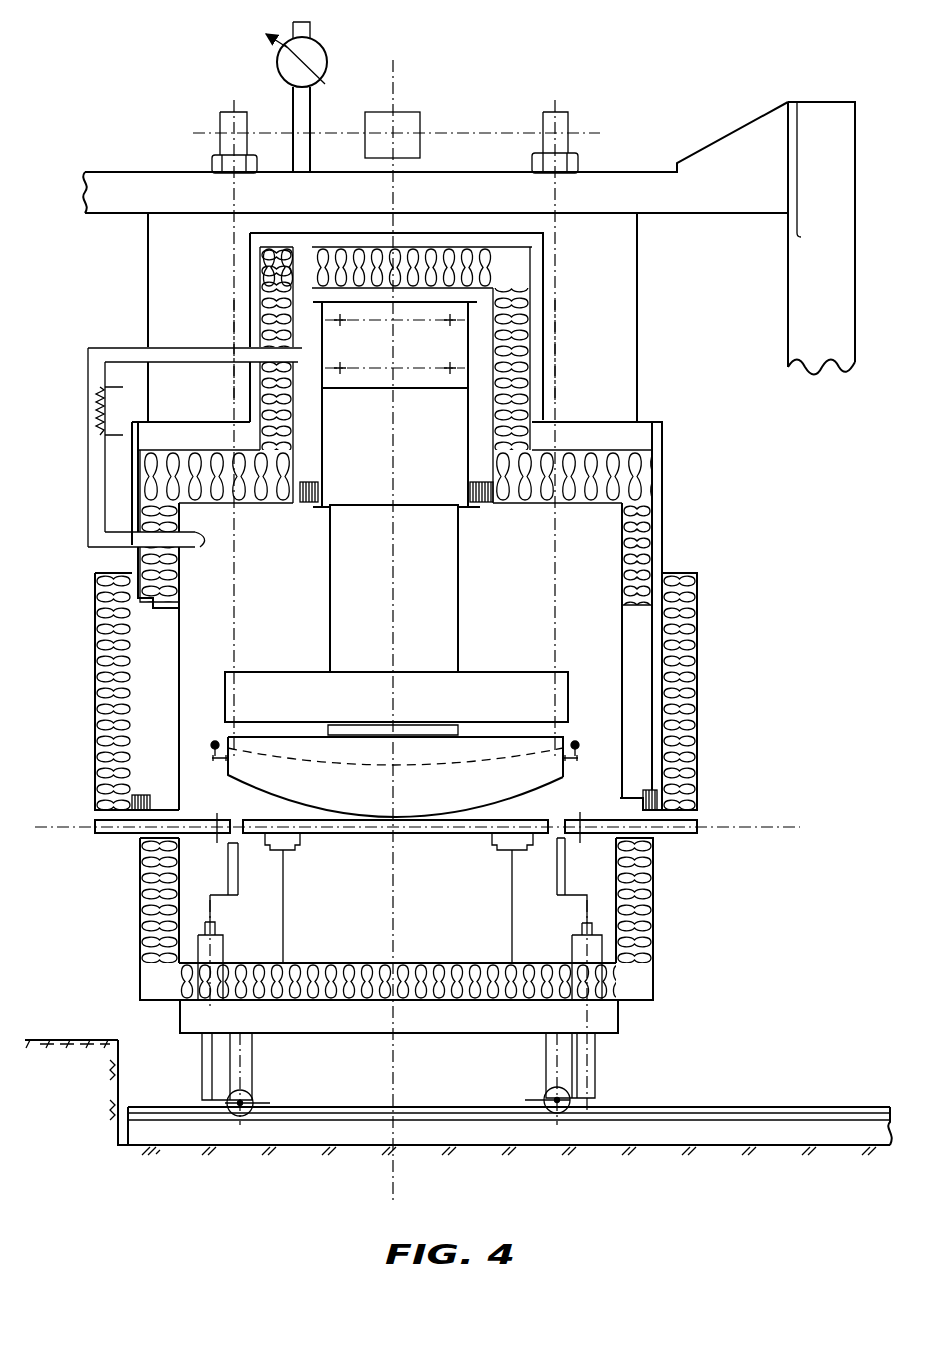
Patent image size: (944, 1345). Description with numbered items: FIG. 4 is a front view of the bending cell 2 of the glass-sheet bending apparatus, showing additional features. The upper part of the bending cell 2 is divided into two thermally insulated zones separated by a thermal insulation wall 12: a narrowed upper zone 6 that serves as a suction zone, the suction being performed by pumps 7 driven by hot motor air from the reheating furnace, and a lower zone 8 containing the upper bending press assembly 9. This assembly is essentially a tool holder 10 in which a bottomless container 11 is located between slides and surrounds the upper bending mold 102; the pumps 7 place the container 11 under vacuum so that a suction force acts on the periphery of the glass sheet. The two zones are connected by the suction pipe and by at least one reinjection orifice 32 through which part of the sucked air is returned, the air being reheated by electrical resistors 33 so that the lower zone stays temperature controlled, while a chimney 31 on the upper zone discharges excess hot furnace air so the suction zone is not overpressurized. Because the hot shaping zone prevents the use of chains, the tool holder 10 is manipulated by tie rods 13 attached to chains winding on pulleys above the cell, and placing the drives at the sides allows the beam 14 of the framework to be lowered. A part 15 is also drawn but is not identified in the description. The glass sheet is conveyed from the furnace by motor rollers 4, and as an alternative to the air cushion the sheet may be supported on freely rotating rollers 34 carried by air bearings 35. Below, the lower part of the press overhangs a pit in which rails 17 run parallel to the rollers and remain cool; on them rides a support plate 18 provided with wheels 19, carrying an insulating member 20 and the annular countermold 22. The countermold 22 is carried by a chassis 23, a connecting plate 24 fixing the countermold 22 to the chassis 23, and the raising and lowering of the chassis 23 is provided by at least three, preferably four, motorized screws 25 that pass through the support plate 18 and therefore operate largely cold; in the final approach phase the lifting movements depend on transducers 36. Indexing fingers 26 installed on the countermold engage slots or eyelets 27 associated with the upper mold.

The bending cell 2 is at (598, 553).
The motor rollers 4 is at (683, 836).
The narrowed upper zone 6 is at (540, 318).
The pumps 7 is at (420, 380).
The lower zone 8 is at (301, 565).
The upper bending press assembly 9 is at (578, 694).
The tool holder 10 is at (485, 688).
The bottomless container 11 is at (491, 783).
The thermal insulation wall 12 is at (488, 505).
The tie rods 13 is at (555, 373).
The beam 14 is at (620, 180).
The support column 15 is at (812, 305).
The rails 17 is at (752, 1113).
The support plate 18 is at (447, 1020).
The wheels 19 is at (545, 1098).
The insulating member 20 is at (427, 980).
The annular countermold 22 is at (226, 842).
The chassis 23 is at (625, 912).
The connecting plate 24 is at (582, 896).
The motorized screws 25 is at (598, 973).
The indexing fingers 26 is at (578, 818).
The slots or eyelets 27 is at (575, 741).
The chimney 31 is at (300, 112).
The reinjection orifice 32 is at (132, 563).
The electrical resistors 33 is at (95, 410).
The freely rotating rollers 34 is at (346, 837).
The air bearings 35 is at (298, 842).
The transducers 36 is at (215, 741).
The upper bending mold 102 is at (332, 762).